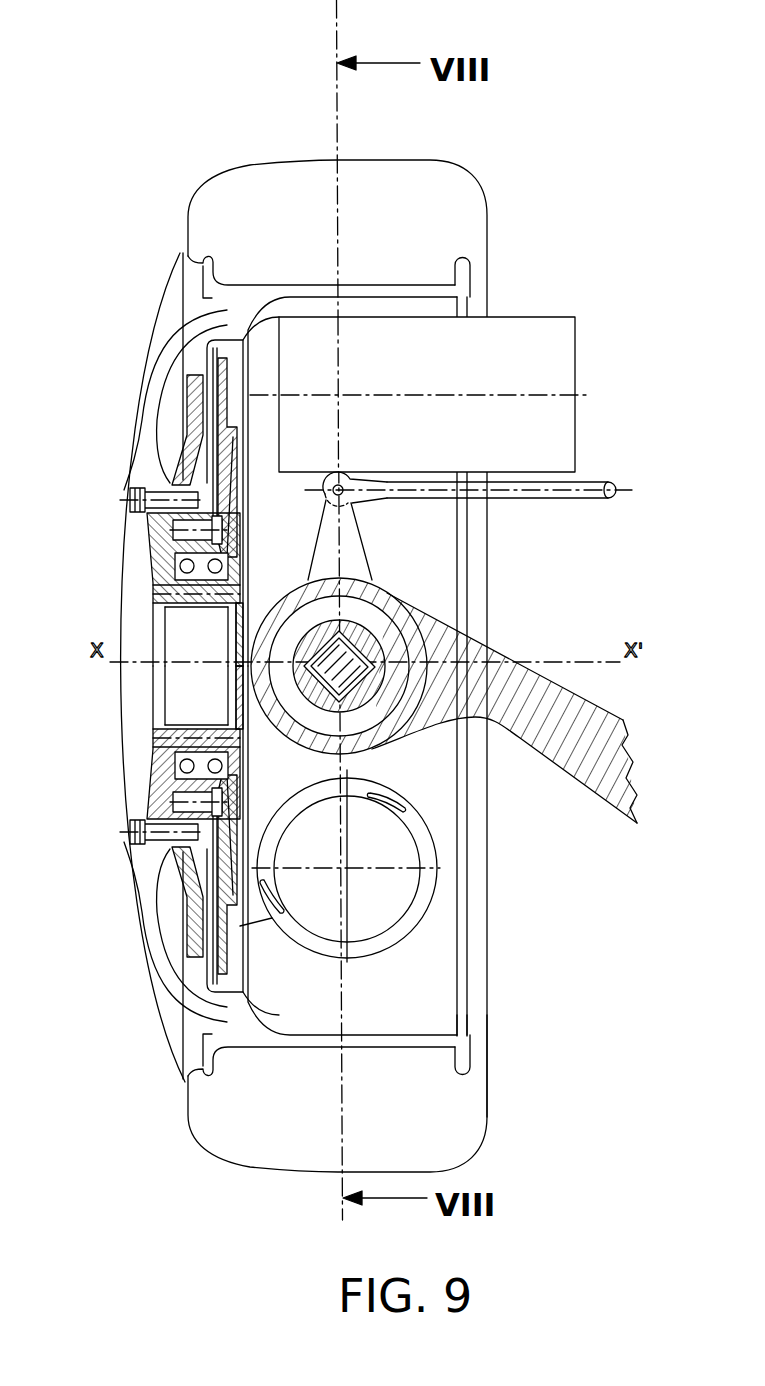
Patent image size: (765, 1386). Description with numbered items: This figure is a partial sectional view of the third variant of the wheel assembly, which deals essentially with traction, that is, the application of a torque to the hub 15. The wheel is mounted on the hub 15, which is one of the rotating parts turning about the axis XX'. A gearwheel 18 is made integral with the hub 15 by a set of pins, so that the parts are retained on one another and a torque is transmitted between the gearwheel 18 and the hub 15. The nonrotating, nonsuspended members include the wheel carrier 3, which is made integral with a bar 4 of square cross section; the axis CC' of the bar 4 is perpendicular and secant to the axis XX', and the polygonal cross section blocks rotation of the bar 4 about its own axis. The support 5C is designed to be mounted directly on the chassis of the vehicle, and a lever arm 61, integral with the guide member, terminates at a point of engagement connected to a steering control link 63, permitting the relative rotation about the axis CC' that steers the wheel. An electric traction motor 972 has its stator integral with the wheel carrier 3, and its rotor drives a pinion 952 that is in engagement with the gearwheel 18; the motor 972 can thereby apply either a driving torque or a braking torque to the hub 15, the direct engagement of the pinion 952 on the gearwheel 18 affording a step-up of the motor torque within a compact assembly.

The wheel carrier 3 is at (218, 352).
The pinion 952 is at (225, 378).
The electric motor 972 is at (548, 340).
The steering control link 63 is at (592, 484).
The lever arm 61 is at (355, 538).
The support 5C is at (480, 660).
The bar 4 is at (350, 670).
The hub 15 is at (163, 772).
The gearwheel 18 is at (217, 866).